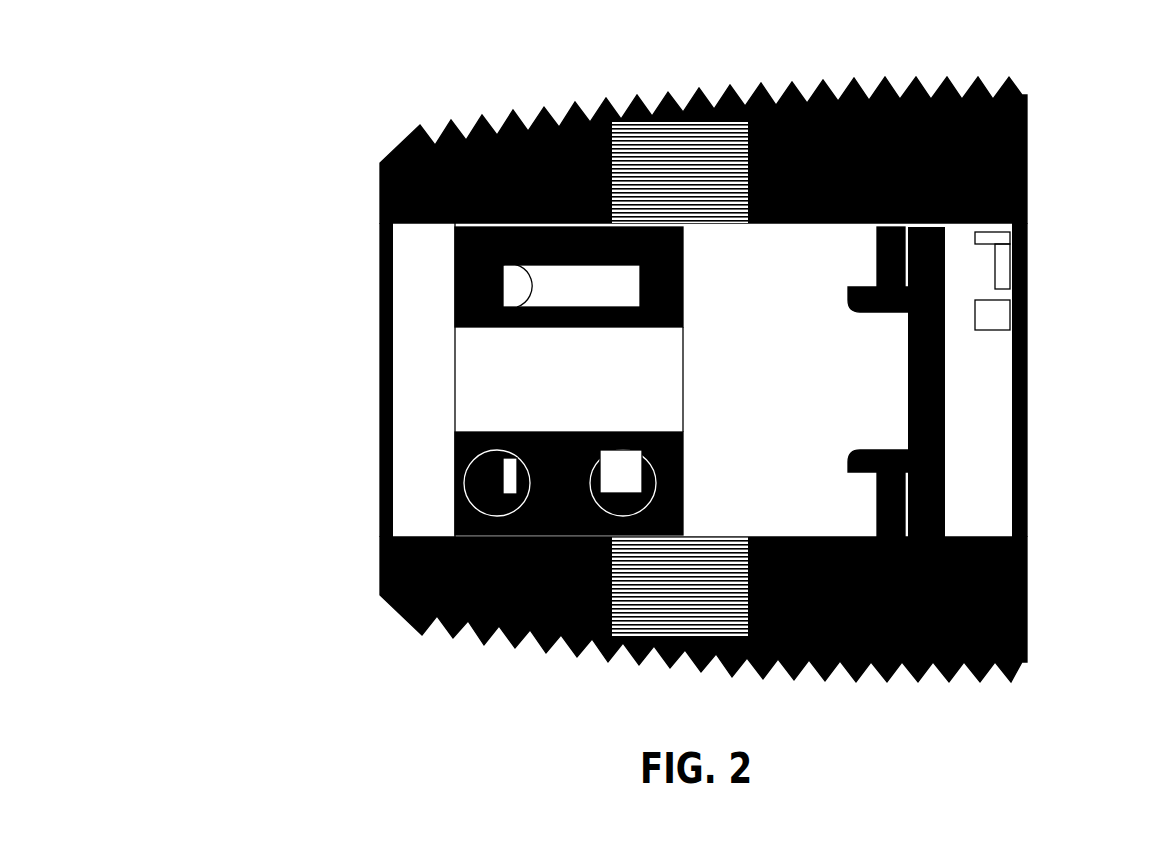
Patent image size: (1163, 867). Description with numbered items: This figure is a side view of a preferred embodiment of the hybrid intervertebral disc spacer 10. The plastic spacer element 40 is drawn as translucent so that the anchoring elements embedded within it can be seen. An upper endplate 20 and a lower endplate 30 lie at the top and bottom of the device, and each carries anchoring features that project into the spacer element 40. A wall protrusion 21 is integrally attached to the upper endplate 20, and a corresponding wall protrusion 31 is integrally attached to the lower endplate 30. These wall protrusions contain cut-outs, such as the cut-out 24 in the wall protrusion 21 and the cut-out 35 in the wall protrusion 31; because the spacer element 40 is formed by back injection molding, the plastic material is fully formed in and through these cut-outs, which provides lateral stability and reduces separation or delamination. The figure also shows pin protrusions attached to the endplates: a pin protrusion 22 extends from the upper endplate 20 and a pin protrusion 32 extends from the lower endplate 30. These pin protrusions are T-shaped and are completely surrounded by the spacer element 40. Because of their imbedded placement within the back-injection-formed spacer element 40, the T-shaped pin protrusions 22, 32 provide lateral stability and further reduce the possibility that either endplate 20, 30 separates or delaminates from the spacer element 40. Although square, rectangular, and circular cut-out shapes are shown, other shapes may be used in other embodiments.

The disc spacer 10 is at (282, 96).
The upper endplate 20 is at (1025, 155).
The wall protrusion 21 is at (473, 265).
The pin protrusion 22 is at (903, 293).
The cut-out 24 is at (560, 287).
The lower endplate 30 is at (1025, 608).
The wall protrusion 31 is at (475, 520).
The pin protrusion 32 is at (905, 463).
The cut-out 35 is at (560, 437).
The spacer element 40 is at (990, 380).